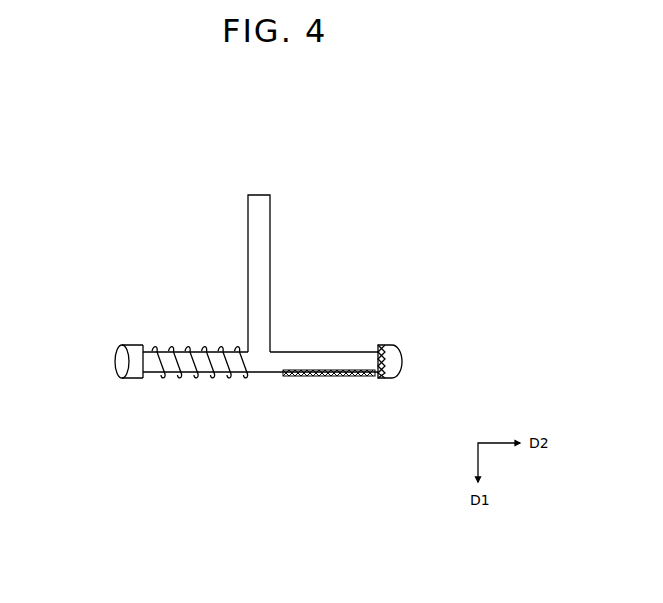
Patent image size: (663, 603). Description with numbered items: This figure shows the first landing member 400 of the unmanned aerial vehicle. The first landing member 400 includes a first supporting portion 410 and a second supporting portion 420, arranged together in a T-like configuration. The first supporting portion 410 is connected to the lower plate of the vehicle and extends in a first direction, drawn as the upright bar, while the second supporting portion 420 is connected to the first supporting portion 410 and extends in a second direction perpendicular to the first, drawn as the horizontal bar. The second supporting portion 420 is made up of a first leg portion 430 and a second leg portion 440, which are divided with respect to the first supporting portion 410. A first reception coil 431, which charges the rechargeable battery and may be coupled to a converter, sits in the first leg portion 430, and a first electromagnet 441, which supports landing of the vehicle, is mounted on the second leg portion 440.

The first landing member 400 is at (274, 130).
The first supporting portion 410 is at (280, 197).
The second supporting portion 420 is at (358, 468).
The first leg portion 430 is at (181, 385).
The first reception coil 431 is at (188, 348).
The second leg portion 440 is at (337, 408).
The first electromagnet 441 is at (329, 397).